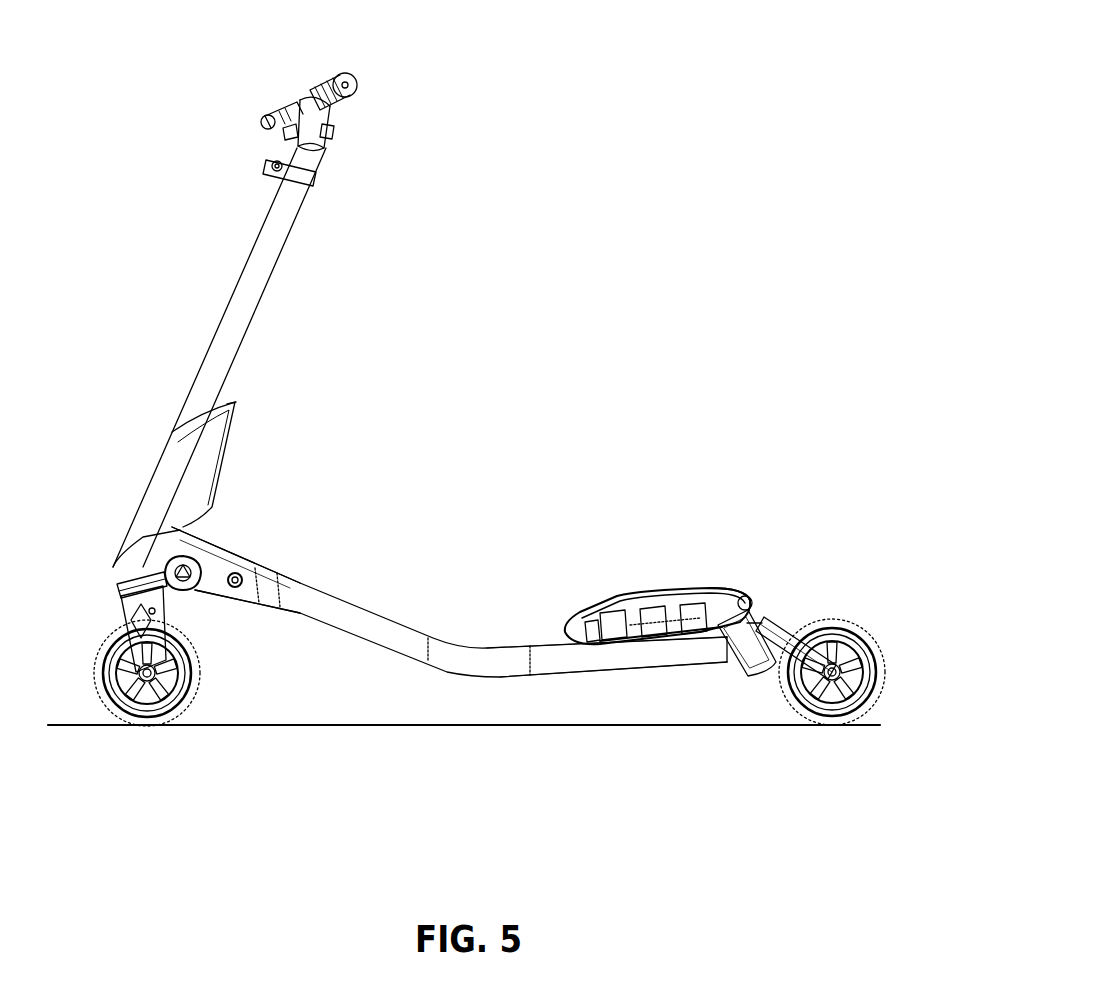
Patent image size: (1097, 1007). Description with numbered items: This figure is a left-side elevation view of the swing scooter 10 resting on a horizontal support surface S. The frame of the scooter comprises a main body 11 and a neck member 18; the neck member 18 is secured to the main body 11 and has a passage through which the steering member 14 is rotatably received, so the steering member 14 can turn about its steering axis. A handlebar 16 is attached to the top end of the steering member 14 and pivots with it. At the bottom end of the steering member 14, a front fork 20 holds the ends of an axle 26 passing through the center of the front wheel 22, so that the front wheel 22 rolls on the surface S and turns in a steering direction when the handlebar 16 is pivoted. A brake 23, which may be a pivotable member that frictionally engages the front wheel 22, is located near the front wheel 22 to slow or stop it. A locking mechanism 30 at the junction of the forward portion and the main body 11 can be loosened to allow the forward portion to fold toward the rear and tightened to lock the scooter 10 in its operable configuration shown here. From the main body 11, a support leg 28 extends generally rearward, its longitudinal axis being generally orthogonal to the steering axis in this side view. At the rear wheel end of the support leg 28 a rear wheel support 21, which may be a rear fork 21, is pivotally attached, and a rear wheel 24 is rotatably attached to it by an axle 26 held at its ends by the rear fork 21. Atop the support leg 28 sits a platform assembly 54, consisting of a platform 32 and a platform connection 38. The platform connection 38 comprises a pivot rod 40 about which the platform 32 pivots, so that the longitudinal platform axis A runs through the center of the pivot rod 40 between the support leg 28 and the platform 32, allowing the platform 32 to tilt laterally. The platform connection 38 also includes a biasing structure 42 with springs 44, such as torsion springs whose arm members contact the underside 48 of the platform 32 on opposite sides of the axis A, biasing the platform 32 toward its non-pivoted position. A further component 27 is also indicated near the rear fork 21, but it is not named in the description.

The swing scooter 10 is at (455, 431).
The main body 11 is at (222, 552).
The steering member 14 is at (245, 287).
The handlebar 16 is at (348, 73).
The neck member 18 is at (153, 485).
The front fork 20 is at (125, 607).
The rear wheel support 21 is at (758, 645).
The front wheel 22 is at (161, 719).
The brake 23 is at (163, 625).
The rear wheel 24 is at (837, 622).
The axle 26 is at (118, 707).
The rear bracket 27 is at (745, 658).
The support leg 28 is at (410, 645).
The locking mechanism 30 is at (190, 592).
The platform 32 is at (650, 602).
The platform connection 38 is at (593, 648).
The pivot rod 40 is at (683, 630).
The biasing structure 42 is at (647, 661).
The springs 44 is at (612, 616).
The underside 48 is at (707, 618).
The platform assembly 54 is at (609, 574).
The longitudinal platform axis A is at (762, 622).
The support surface S is at (347, 724).